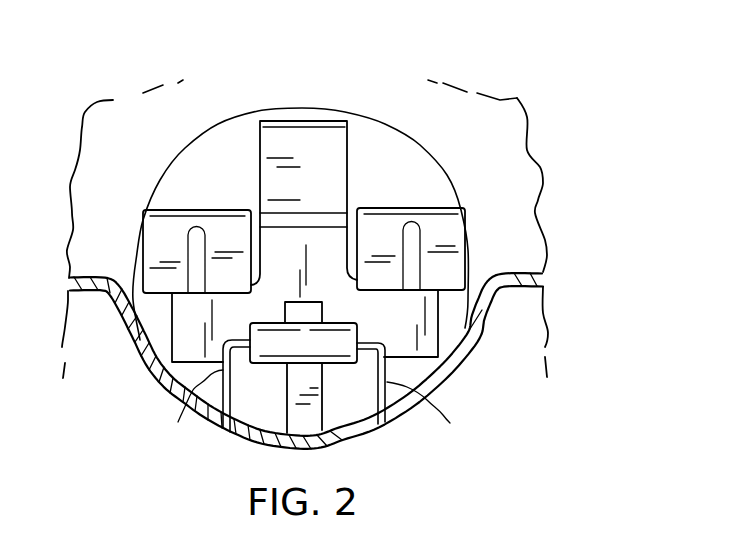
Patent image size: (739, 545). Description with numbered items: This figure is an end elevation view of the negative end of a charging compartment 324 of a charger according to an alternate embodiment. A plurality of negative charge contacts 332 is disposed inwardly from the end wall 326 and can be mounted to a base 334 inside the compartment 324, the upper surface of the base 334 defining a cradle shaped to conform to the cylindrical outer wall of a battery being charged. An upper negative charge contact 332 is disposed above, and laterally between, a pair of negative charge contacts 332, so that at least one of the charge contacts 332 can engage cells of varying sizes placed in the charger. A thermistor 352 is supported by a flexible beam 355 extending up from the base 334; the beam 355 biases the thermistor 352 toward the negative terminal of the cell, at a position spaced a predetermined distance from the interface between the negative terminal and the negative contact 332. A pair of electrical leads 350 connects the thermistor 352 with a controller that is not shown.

The compartment 324 is at (503, 118).
The end wall 326 is at (540, 165).
The negative charge contact 332 is at (305, 119).
The base 334 is at (378, 437).
The electrical leads 350 is at (325, 412).
The thermistor 352 is at (250, 433).
The flexible beam 355 is at (330, 412).